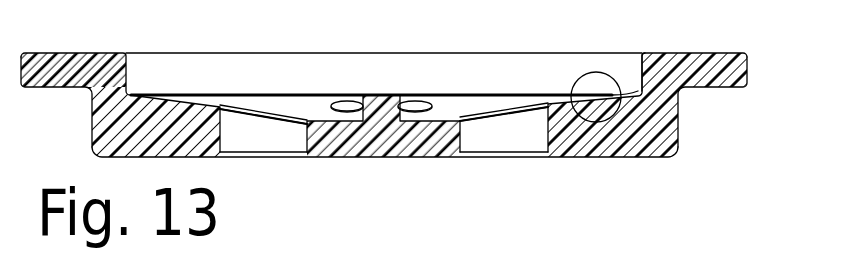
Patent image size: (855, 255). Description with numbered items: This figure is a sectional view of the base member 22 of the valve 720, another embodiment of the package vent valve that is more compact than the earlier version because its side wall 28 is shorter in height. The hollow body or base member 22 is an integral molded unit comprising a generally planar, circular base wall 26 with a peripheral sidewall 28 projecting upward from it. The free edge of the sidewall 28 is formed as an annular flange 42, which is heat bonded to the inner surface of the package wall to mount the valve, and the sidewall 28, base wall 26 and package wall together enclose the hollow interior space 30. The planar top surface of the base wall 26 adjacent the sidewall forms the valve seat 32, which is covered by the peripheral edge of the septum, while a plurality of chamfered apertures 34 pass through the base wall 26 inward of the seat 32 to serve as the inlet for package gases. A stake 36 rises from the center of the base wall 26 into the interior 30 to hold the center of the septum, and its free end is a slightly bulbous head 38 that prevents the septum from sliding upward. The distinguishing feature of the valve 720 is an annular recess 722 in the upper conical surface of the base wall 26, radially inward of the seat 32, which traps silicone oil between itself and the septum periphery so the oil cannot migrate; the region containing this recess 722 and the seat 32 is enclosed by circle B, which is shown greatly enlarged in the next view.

The valve 720 is at (690, 143).
The hollow body or base member 22 is at (682, 107).
The peripheral sidewall 28 is at (90, 107).
The base wall 26 is at (357, 140).
The hollow interior space 30 is at (493, 78).
The valve seat 32 is at (618, 91).
The chamfered apertures 34 is at (322, 133).
The projection or stake 36 is at (365, 103).
The bulbous head 38 is at (408, 102).
The annular flange 42 is at (683, 55).
The annular recess 722 is at (175, 96).
The circle B is at (597, 72).